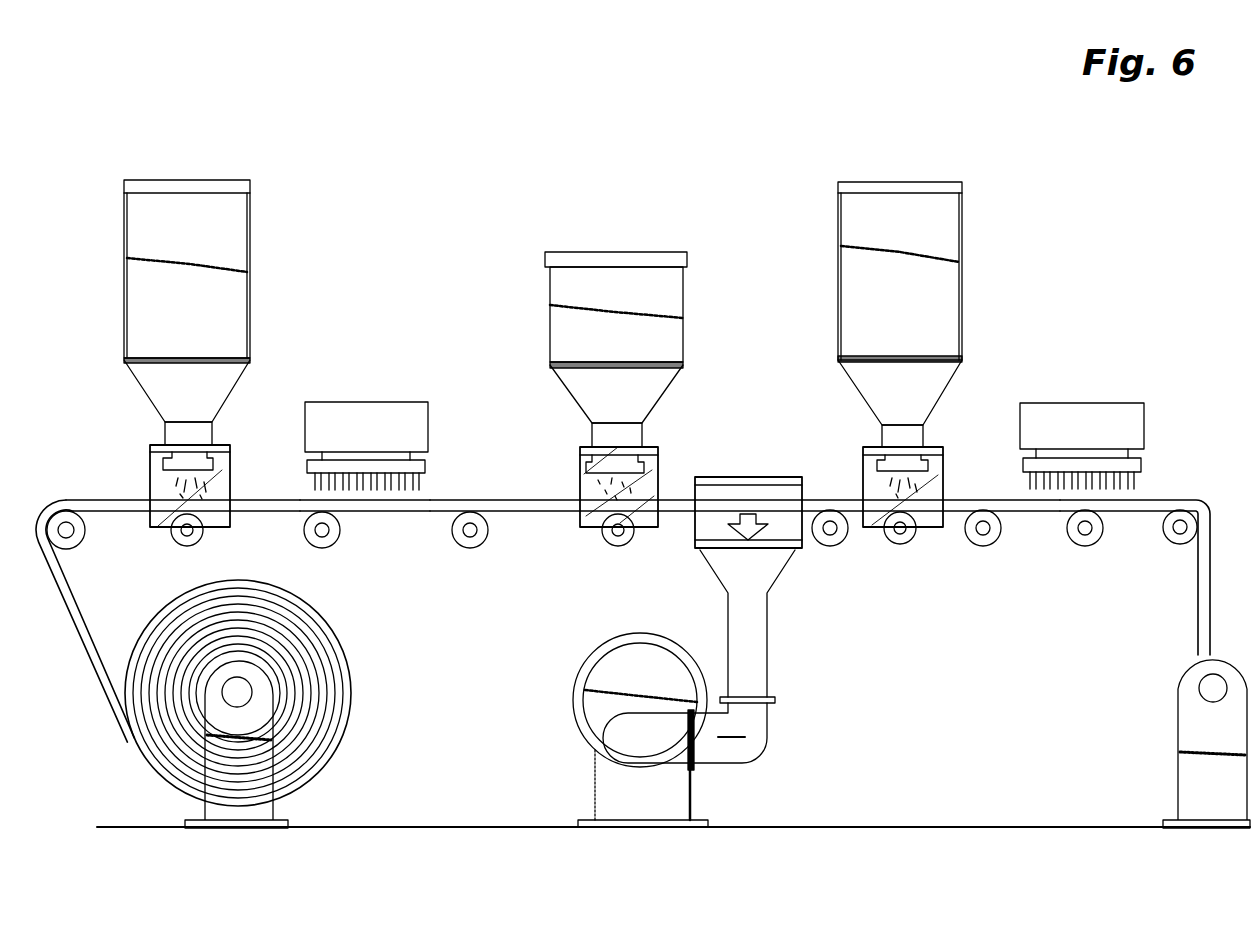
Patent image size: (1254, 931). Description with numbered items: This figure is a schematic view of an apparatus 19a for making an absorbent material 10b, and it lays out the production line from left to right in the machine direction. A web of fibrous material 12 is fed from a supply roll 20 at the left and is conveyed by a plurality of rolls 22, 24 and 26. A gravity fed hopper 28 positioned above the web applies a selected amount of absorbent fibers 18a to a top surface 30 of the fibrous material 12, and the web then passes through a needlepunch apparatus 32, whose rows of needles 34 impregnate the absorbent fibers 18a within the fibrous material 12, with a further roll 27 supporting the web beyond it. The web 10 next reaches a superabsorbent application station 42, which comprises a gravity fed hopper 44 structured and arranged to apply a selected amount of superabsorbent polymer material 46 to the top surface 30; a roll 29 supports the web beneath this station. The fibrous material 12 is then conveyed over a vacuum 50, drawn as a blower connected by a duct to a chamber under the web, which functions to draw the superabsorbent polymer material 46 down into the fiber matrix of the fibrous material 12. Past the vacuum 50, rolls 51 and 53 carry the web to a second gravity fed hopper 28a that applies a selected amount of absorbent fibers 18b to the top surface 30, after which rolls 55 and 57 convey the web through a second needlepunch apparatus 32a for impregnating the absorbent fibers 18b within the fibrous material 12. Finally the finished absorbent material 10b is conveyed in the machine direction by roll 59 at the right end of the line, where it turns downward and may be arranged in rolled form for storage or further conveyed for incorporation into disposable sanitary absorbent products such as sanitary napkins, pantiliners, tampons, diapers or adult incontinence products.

The composite web / apparatus 10 is at (530, 495).
The absorbent material 10b is at (1168, 492).
The web of fibrous material 12 is at (106, 497).
The absorbent fibers 18a is at (164, 476).
The absorbent fibers 18b is at (878, 478).
The apparatus 19a is at (1082, 222).
The supply roll 20 is at (345, 645).
The roll 22 is at (76, 546).
The roll 24 is at (190, 546).
The roll 26 is at (321, 548).
The support roller 27 is at (469, 548).
The gravity fed hopper 28 is at (262, 235).
The second gravity fed hopper 28a is at (978, 250).
The support roller 29 is at (606, 546).
The top surface 30 is at (302, 497).
The needlepunch apparatus 32 is at (373, 449).
The second needlepunch apparatus 32a is at (1126, 396).
The spray nozzles 34 is at (372, 495).
The superabsorbent application station 42 is at (633, 323).
The gravity fed hopper 44 is at (678, 338).
The superabsorbent polymer material 46 is at (654, 470).
The vacuum 50 is at (588, 648).
The roll 51 is at (830, 547).
The roll 53 is at (898, 545).
The roll 55 is at (984, 547).
The roll 57 is at (1082, 547).
The roll 59 is at (1165, 545).